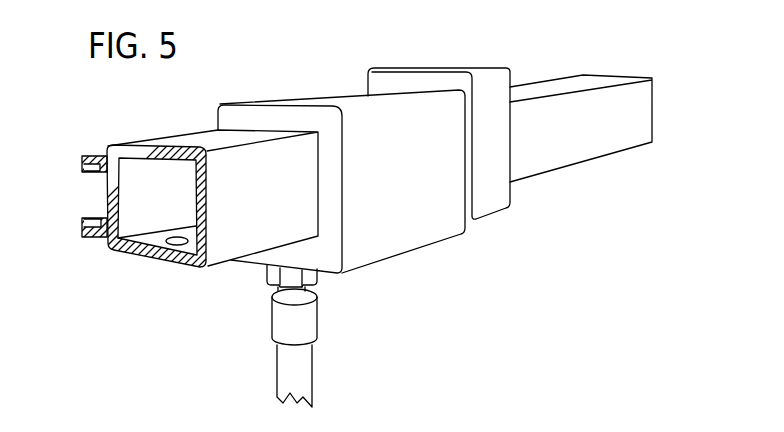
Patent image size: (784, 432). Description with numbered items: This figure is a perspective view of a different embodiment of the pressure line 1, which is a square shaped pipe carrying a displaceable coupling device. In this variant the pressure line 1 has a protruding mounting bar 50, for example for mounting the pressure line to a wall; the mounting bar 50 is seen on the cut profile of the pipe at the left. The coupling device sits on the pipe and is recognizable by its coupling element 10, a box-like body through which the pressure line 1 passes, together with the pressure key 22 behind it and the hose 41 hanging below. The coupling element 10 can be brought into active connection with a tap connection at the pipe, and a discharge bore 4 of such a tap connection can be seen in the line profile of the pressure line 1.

The pressure line 1 is at (578, 152).
The discharge bore 4 is at (175, 245).
The coupling element 10 is at (407, 243).
The pressure key 22 is at (497, 201).
The hose 41 is at (300, 381).
The mounting bar 50 is at (103, 202).